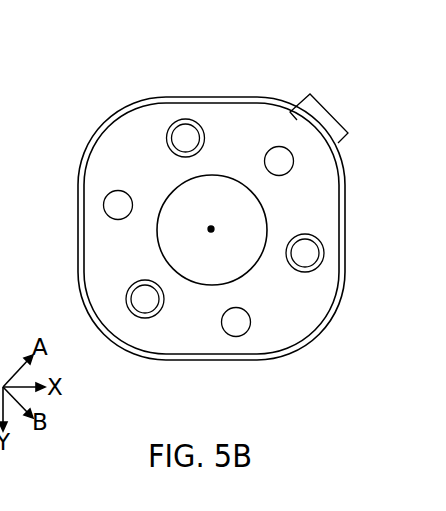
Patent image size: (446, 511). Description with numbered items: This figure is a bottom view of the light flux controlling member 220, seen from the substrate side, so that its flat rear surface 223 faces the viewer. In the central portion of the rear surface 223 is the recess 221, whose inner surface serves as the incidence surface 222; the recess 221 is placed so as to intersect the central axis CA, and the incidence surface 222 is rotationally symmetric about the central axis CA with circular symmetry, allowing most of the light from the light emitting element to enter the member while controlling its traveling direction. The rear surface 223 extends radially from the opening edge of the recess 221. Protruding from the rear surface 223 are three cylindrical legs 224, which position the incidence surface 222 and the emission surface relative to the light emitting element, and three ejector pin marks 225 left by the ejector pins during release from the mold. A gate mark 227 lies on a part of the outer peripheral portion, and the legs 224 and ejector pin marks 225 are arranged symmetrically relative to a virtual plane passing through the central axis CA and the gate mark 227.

The light flux controlling member 220 is at (300, 56).
The recess 221 is at (160, 228).
The incidence surface 222 is at (180, 253).
The rear surface 223 is at (142, 143).
The legs 224 is at (179, 126).
The ejector pin marks 225 is at (110, 198).
The gate mark 227 is at (322, 115).
The central axis CA is at (211, 229).